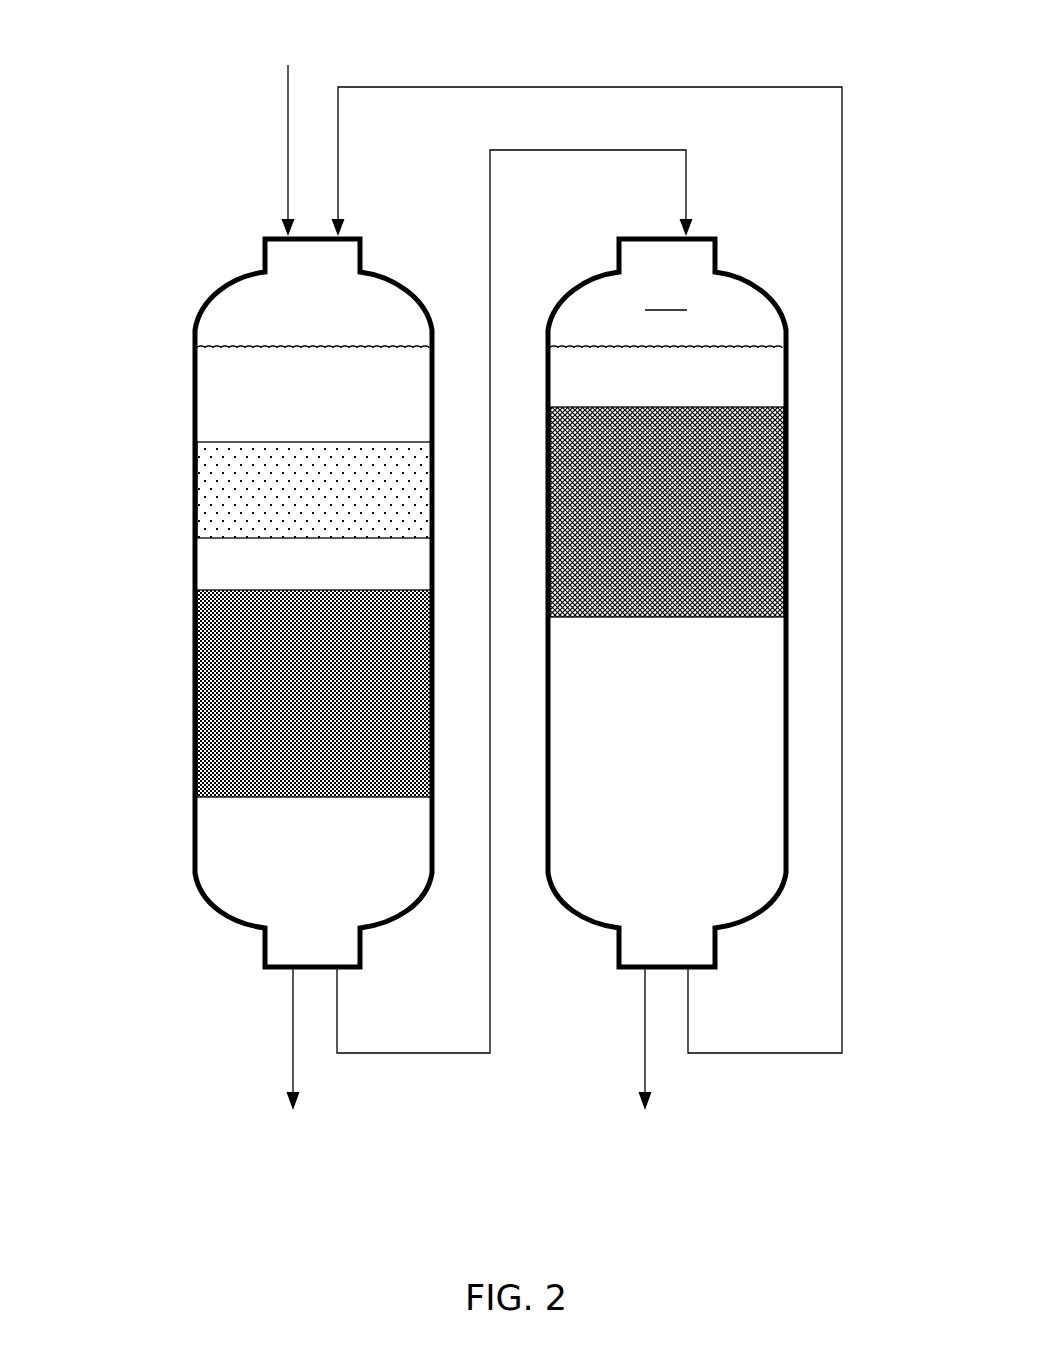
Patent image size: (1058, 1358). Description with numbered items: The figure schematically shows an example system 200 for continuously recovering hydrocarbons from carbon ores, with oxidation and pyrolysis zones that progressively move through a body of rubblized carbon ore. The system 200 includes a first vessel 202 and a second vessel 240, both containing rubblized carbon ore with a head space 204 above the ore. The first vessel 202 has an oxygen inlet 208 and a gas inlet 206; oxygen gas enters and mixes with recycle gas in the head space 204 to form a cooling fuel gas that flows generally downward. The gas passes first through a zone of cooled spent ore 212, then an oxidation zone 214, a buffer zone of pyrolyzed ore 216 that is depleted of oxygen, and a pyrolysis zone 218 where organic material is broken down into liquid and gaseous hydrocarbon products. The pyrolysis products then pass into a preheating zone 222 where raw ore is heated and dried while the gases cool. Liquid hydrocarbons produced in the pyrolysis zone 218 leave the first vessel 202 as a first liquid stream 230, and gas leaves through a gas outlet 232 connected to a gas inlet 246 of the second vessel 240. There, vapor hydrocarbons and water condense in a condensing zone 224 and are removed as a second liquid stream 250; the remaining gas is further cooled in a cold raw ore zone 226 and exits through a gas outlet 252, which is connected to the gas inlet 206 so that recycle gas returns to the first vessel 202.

The system 200 is at (126, 40).
The first vessel 202 is at (193, 312).
The head space 204 is at (291, 309).
The gas inlet 206 is at (337, 203).
The oxygen inlet 208 is at (288, 118).
The zone of cooled spent ore 212 is at (291, 410).
The oxidation zone 214 is at (289, 502).
The buffer zone of pyrolyzed ore 216 is at (291, 575).
The pyrolysis zone 218 is at (289, 704).
The preheating zone 222 is at (291, 870).
The condensing zone 224 is at (643, 524).
The cold raw ore zone 226 is at (645, 762).
The first liquid stream 230 is at (290, 1065).
The gas outlet 232 is at (417, 1057).
The second vessel 240 is at (788, 333).
The gas inlet 246 is at (686, 183).
The second liquid stream 250 is at (643, 1075).
The gas outlet 252 is at (730, 1055).